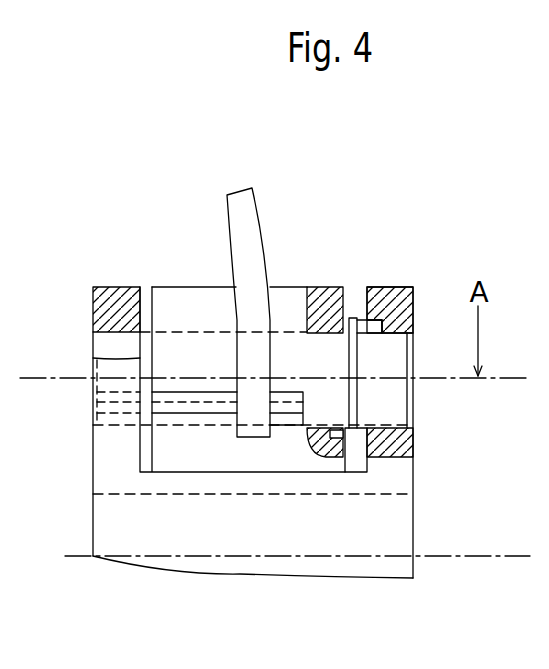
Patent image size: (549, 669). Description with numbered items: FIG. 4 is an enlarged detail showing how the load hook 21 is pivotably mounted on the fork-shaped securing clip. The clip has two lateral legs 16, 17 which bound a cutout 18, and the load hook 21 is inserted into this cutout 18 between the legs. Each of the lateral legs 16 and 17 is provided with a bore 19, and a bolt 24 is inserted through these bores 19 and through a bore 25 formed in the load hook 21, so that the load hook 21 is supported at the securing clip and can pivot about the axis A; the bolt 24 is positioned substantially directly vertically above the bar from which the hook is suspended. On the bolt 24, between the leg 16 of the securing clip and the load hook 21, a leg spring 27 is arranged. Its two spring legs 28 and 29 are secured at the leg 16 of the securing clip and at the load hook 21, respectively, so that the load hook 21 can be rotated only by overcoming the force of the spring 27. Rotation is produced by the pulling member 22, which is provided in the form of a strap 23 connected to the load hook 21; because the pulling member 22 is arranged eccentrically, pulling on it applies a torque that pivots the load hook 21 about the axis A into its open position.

The lateral leg 16 is at (410, 288).
The lateral leg 17 is at (97, 286).
The cutout 18 is at (147, 457).
The bores 19 is at (114, 345).
The load hook 21 is at (313, 286).
The pulling member 22 is at (225, 237).
The strap 23 is at (228, 208).
The bolt 24 is at (383, 402).
The bore 25 is at (319, 345).
The leg spring 27 is at (353, 316).
The spring leg 28 is at (375, 320).
The spring leg 29 is at (335, 440).